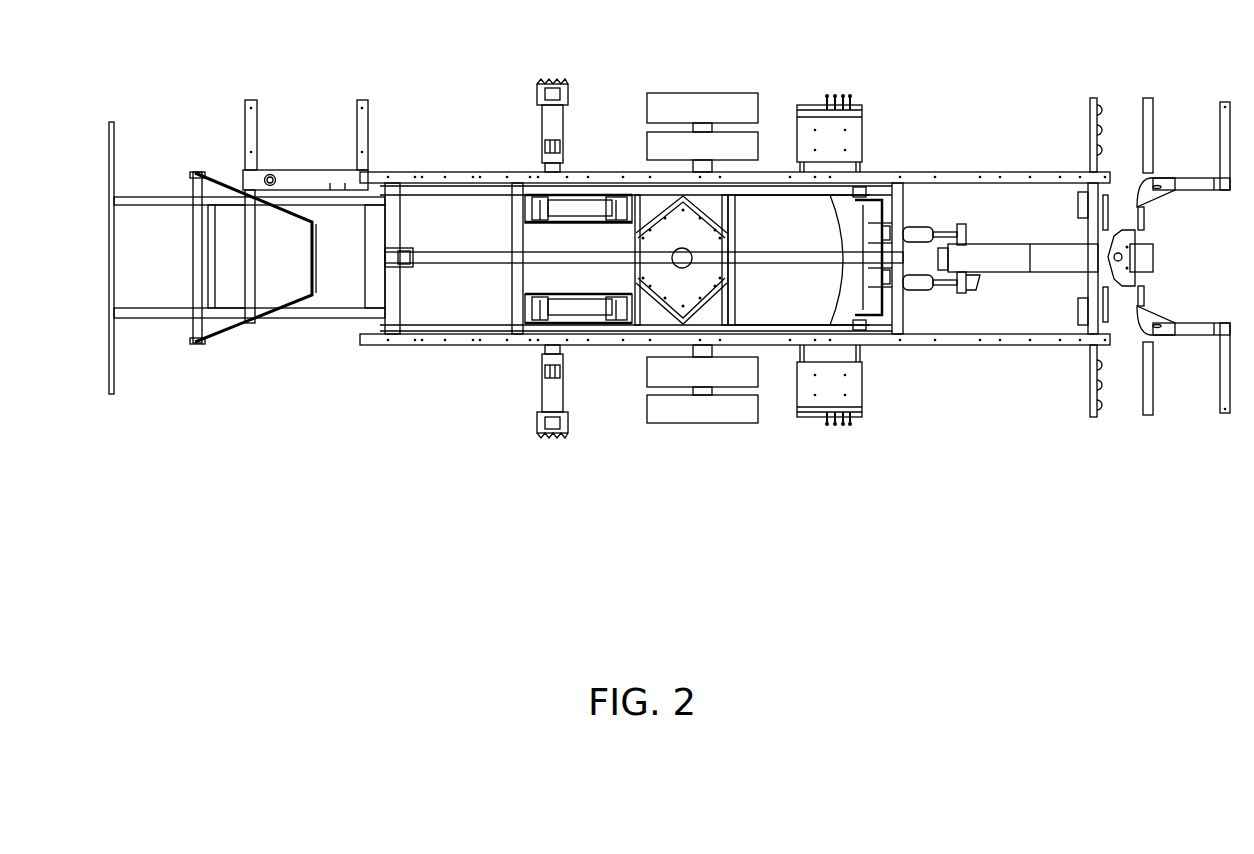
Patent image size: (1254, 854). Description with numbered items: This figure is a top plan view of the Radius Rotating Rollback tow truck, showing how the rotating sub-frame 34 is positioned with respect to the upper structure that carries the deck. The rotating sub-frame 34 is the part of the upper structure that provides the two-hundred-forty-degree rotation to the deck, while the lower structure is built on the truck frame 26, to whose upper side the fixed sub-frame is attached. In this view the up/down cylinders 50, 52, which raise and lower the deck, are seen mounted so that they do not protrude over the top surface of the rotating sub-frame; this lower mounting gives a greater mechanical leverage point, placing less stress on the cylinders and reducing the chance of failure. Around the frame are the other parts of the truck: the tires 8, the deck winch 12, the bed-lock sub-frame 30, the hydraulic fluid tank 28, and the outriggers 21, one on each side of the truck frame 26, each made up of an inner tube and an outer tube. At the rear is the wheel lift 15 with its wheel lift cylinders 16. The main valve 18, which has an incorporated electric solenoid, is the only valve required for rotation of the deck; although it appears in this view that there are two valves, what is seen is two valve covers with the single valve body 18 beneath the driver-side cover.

The tires 8 is at (704, 105).
The deck winch 12 is at (247, 258).
The wheel lift 15 is at (1154, 418).
The wheel lift cylinders 16 is at (963, 227).
The main valve 18 is at (862, 392).
The outriggers 21 is at (547, 122).
The truck frame 26 is at (377, 316).
The hydraulic fluid tank 28 is at (317, 175).
The bed-lock sub-frame 30 is at (290, 312).
The rotating sub-frame 34 is at (735, 212).
The up/down cylinder 50 is at (587, 205).
The up/down cylinder 52 is at (583, 307).